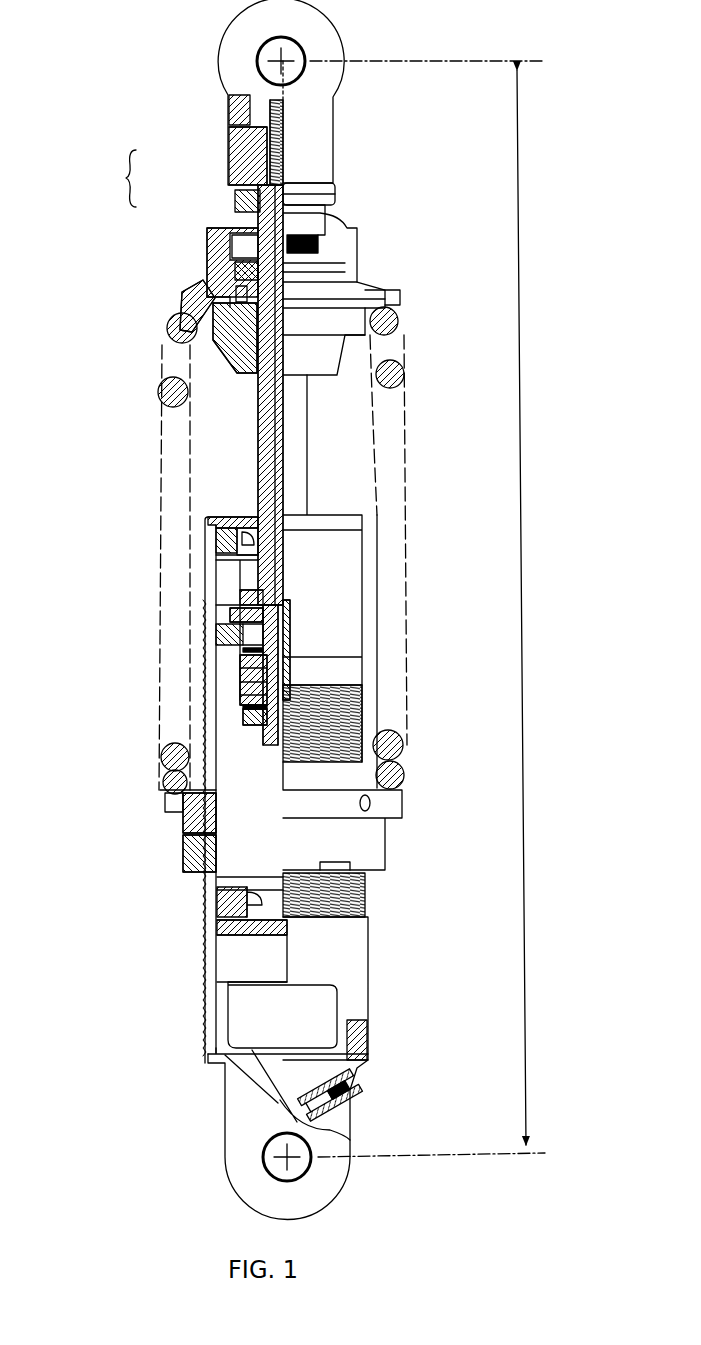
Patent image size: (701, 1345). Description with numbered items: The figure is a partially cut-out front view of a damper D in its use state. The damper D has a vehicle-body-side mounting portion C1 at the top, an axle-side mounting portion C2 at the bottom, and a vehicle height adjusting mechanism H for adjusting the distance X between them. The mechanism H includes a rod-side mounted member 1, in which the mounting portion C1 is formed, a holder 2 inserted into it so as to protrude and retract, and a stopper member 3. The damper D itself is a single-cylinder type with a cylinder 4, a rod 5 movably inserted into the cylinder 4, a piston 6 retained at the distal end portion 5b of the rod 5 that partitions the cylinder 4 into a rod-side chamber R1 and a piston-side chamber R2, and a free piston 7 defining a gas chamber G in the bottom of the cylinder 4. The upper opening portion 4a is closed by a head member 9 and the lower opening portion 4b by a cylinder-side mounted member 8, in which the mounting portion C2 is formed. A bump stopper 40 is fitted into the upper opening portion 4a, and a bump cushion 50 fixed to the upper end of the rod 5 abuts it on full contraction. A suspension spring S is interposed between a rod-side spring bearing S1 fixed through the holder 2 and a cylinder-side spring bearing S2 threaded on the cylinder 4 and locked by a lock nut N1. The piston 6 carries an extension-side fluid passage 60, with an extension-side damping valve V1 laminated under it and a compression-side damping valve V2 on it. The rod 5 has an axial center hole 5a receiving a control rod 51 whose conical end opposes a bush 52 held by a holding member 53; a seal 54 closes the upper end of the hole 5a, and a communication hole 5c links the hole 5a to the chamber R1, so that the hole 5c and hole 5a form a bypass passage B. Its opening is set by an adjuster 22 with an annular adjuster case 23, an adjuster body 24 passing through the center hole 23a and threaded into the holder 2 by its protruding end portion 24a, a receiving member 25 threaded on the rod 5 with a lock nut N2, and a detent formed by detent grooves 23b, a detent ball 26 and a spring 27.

The rod-side mounted member 1 is at (228, 100).
The vehicle-body-side mounting portion C1 is at (252, 52).
The vehicle height adjusting mechanism H is at (345, 150).
The stopper member 3 is at (245, 142).
The adjuster 22 is at (113, 178).
The adjuster body 24 is at (262, 192).
The adjuster case 23 is at (240, 212).
The protruding end portion 24a is at (335, 196).
The center hole 23a is at (296, 235).
The bump cushion 50 is at (340, 357).
The spring 27 is at (345, 292).
The seal 54 is at (292, 266).
The detent ball 26 is at (320, 248).
The holder 2 is at (210, 246).
The detent grooves 23b is at (232, 246).
The receiving member 25 is at (235, 272).
The rod-side spring bearing S1 is at (178, 322).
The lock nut N2 is at (225, 342).
The suspension spring S is at (158, 393).
The axial center hole 5a is at (276, 428).
The rod 5 is at (310, 462).
The control rod 51 is at (258, 458).
The cylinder 4 is at (370, 628).
The bump stopper 40 is at (210, 517).
The upper opening portion 4a is at (214, 550).
The head member 9 is at (216, 600).
The compression-side damping valve V2 is at (216, 622).
The chamber on the rod side R1 is at (216, 655).
The distal end portion 5b is at (248, 672).
The piston 6 is at (228, 705).
The extension-side damping valve V1 is at (250, 722).
The communication hole 5c is at (290, 585).
The bypass passage B is at (292, 600).
The bush 52 is at (290, 616).
The holding member 53 is at (292, 672).
The extension-side fluid passage 60 is at (292, 725).
The chamber on the piston side R2 is at (258, 843).
The cylinder-side spring bearing S2 is at (180, 832).
The lock nut N1 is at (200, 837).
The free piston 7 is at (205, 892).
The gas chamber G is at (240, 955).
The lower opening portion 4b is at (357, 1047).
The damper D is at (200, 1040).
The cylinder-side mounted member 8 is at (222, 1120).
The axle-side mounting portion C2 is at (262, 1153).
The distance X is at (431, 609).